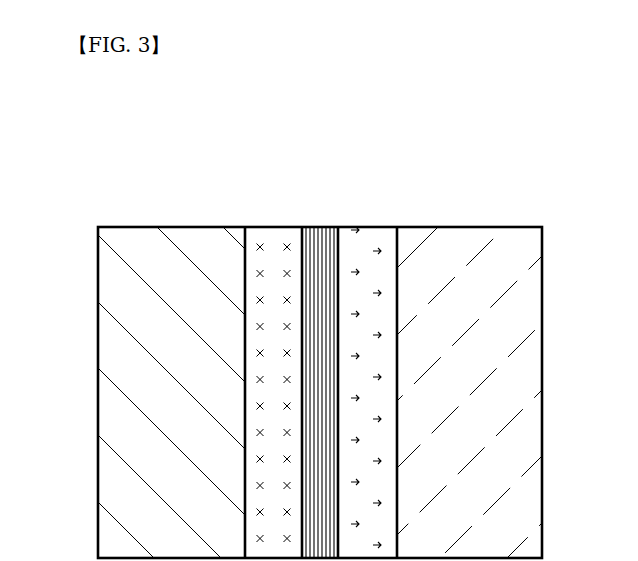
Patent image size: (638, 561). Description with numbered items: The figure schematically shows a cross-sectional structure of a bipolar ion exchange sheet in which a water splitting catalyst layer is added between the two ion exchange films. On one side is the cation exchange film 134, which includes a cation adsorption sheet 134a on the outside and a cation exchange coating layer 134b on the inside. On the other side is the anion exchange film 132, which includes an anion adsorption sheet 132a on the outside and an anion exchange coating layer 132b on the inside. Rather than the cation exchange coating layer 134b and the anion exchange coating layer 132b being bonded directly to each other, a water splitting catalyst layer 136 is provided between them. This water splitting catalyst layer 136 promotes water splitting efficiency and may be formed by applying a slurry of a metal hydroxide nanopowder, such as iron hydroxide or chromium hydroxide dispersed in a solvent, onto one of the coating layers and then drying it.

The anion exchange film 132 is at (468, 143).
The anion adsorption sheet 132a is at (461, 217).
The anion exchange coating layer 132b is at (368, 217).
The cation exchange film 134 is at (250, 143).
The cation adsorption sheet 134a is at (177, 217).
The cation exchange coating layer 134b is at (268, 217).
The water splitting catalyst layer 136 is at (318, 217).